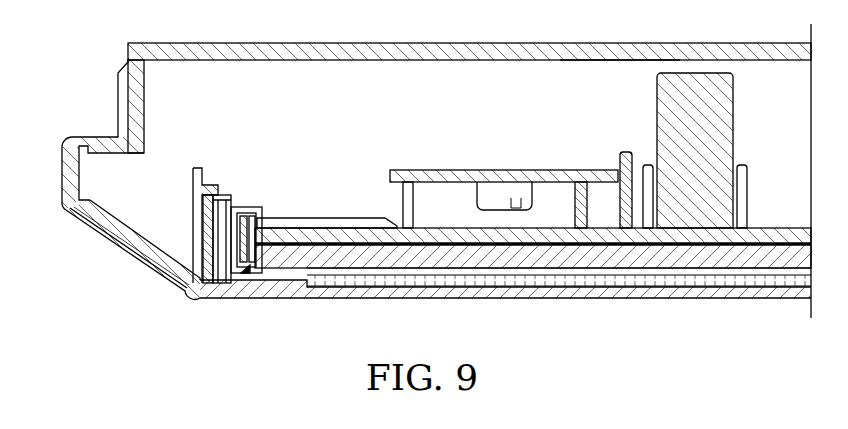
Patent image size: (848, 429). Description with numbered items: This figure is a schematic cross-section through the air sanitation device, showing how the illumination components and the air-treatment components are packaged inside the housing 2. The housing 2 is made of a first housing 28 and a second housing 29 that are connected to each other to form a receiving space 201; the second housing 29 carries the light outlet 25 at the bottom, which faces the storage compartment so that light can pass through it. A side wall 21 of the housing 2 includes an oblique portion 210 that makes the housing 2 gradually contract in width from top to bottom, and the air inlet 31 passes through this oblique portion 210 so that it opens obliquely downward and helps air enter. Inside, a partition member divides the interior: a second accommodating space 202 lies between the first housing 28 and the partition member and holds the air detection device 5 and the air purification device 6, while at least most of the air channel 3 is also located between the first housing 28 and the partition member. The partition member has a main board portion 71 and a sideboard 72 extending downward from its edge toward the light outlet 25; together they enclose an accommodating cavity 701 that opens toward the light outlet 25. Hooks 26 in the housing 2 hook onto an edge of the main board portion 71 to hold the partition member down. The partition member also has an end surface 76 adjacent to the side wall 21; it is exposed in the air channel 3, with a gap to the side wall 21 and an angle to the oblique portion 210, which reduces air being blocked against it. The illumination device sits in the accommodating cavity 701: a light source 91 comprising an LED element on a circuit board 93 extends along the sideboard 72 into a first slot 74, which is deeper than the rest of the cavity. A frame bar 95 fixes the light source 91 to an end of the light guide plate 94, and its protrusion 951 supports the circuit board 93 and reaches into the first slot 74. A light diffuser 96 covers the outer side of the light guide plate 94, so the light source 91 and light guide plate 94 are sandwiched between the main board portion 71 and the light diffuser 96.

The housing 2 is at (415, 170).
The first housing 28 is at (392, 46).
The receiving space 201 is at (612, 76).
The air channel 3 is at (391, 119).
The second accommodating space 202 is at (468, 150).
The side wall 21 is at (64, 193).
The air inlet 31 is at (101, 236).
The oblique portion 210 is at (127, 251).
The second housing 29 is at (133, 258).
The light outlet 25 is at (407, 293).
The hook 26 is at (193, 186).
The end surface 76 is at (205, 220).
The sideboard 72 is at (214, 237).
The first slot 74 is at (233, 214).
The protrusion 951 is at (262, 222).
The circuit board 93 is at (277, 234).
The light source 91 is at (242, 276).
The main board portion 71 is at (347, 218).
The frame bar 95 is at (305, 240).
The accommodating cavity 701 is at (362, 241).
The light guide plate 94 is at (572, 258).
The light diffuser 96 is at (502, 282).
The air detection device 5 is at (478, 180).
The air purification device 6 is at (719, 140).